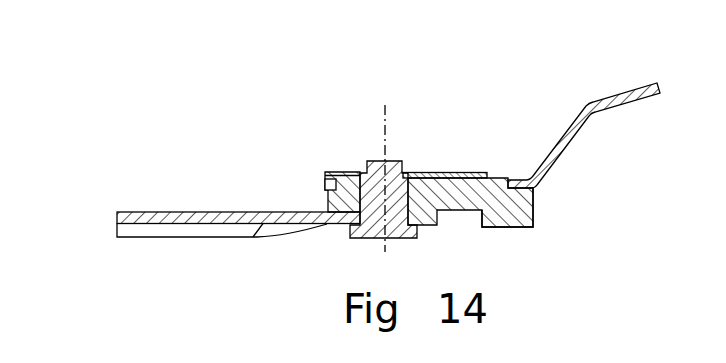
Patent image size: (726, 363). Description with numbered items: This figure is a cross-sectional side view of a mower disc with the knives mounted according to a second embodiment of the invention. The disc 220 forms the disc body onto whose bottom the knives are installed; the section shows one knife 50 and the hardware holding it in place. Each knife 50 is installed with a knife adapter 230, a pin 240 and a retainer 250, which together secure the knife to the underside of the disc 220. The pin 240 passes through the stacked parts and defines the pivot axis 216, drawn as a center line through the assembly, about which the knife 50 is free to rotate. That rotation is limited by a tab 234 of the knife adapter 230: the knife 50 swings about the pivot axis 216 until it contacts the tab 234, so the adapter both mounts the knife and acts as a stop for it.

The knife 50 is at (145, 222).
The pivot axis 216 is at (391, 120).
The disc 220 is at (572, 115).
The knife adapter 230 is at (450, 200).
The tab 234 is at (513, 229).
The pin 240 is at (378, 160).
The retainer 250 is at (323, 175).